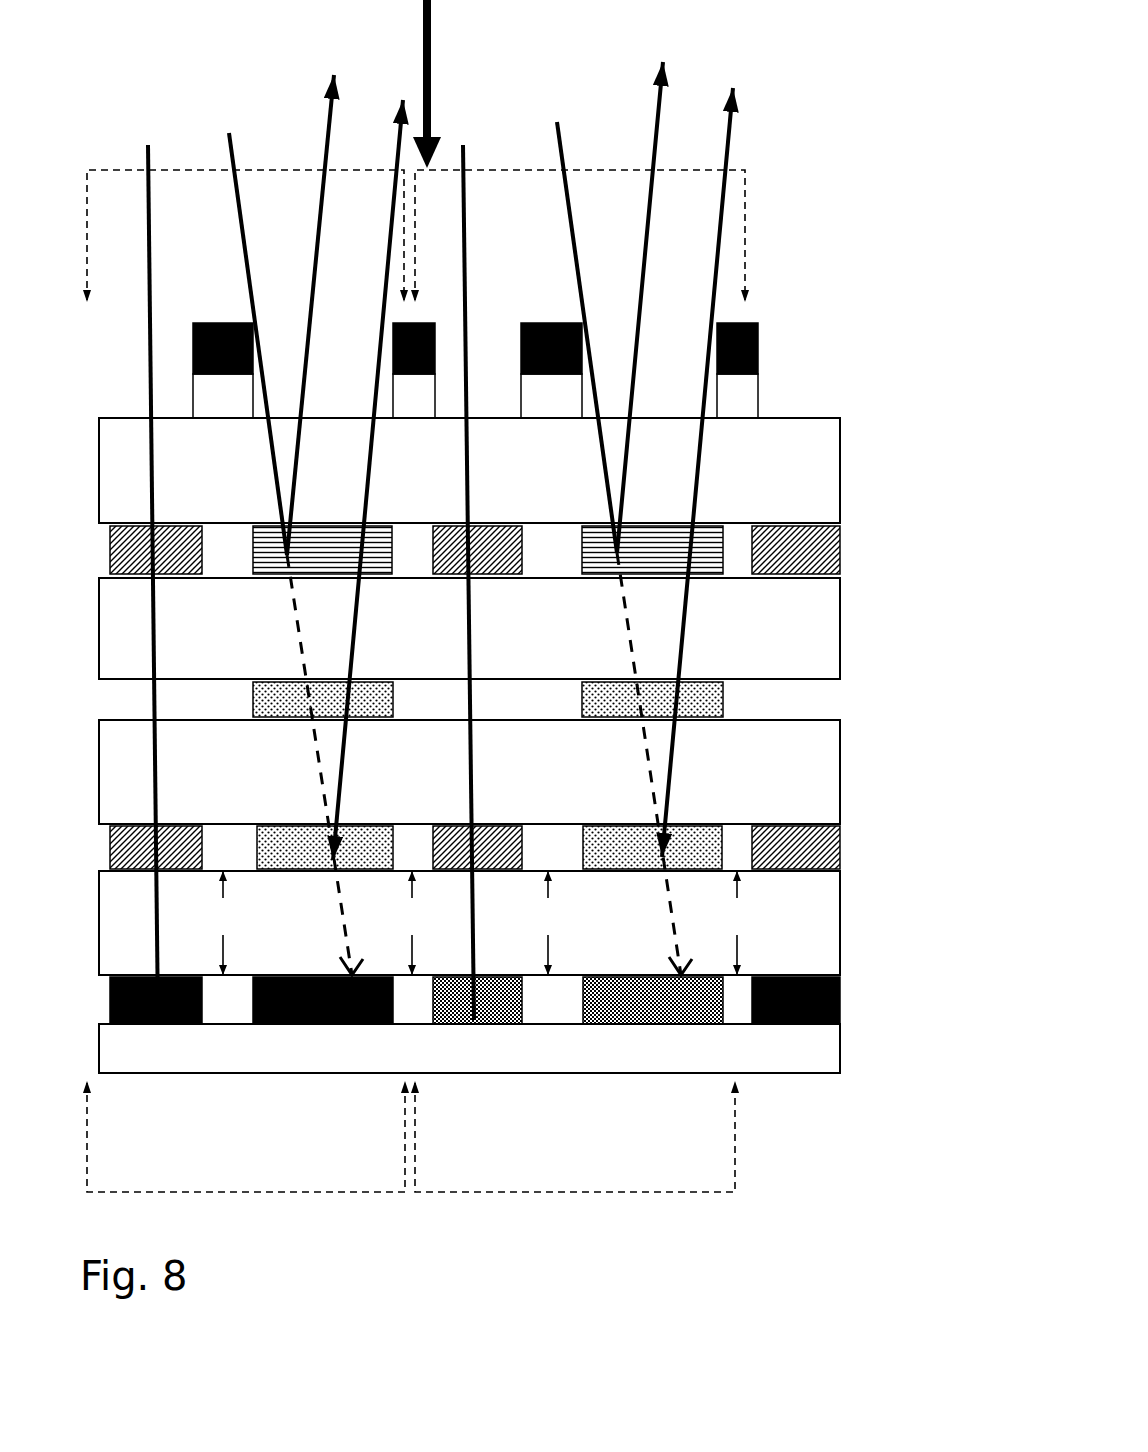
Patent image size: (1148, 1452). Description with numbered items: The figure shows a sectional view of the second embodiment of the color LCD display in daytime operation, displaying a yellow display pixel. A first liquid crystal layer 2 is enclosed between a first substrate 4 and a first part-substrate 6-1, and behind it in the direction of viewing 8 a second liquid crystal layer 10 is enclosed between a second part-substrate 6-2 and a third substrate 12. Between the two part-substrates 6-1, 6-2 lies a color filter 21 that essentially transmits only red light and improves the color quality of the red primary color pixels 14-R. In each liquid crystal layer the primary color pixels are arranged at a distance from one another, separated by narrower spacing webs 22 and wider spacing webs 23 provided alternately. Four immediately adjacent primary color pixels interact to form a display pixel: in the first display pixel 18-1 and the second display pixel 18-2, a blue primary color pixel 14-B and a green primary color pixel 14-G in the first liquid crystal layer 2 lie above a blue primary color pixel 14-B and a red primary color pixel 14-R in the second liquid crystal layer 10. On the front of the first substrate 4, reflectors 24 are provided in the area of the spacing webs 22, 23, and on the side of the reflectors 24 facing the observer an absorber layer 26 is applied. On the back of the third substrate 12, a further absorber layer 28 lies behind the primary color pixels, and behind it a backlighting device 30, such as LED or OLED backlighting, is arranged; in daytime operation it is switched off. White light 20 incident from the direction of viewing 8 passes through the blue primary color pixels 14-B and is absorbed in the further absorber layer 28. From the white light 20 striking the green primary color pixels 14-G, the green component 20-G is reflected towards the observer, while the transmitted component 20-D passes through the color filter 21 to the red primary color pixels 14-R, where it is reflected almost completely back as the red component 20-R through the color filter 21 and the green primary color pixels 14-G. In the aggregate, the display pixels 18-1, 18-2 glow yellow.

The first liquid crystal layer 2 is at (516, 544).
The first substrate 4 is at (815, 483).
The first part-substrate 6-1 is at (823, 640).
The second part-substrate 6-2 is at (823, 781).
The direction of viewing 8 is at (433, 32).
The second liquid crystal layer 10 is at (524, 821).
The third substrate 12 is at (818, 933).
The blue primary color pixel 14-B is at (175, 557).
The green primary color pixel 14-G is at (373, 535).
The red primary color pixel 14-R is at (373, 828).
The first display pixel 18-1 is at (248, 1192).
The second display pixel 18-2 is at (565, 1192).
The white light 20 is at (224, 143).
The green component 20-G is at (323, 128).
The red component 20-R is at (400, 100).
The transmitted component 20-D is at (333, 892).
The color filter 21 is at (377, 700).
The narrower spacing web 22 is at (385, 923).
The wider spacing web 23 is at (574, 923).
The reflector 24 is at (772, 388).
The absorber layer 26 is at (772, 341).
The further absorber layer 28 is at (852, 995).
The backlighting device 30 is at (813, 1056).